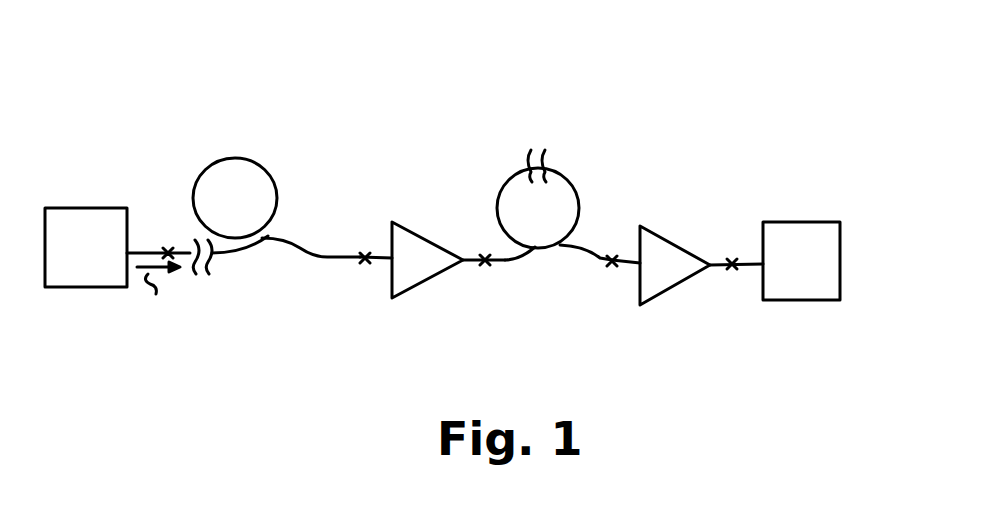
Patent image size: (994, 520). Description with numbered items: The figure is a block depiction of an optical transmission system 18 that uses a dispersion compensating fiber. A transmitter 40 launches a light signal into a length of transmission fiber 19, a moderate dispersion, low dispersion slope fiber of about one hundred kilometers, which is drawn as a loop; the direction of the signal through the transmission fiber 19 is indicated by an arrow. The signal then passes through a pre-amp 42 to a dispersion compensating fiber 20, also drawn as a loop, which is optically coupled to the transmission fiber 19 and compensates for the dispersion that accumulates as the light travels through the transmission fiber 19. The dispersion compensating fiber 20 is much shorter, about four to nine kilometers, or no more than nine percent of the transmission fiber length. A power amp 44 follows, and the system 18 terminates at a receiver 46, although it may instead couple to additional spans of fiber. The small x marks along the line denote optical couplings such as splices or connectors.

The optical transmission system 18 is at (450, 97).
The transmission fiber 19 is at (265, 162).
The dispersion compensating fiber 20 is at (563, 158).
The transmitter 40 is at (88, 204).
The pre-amp 42 is at (428, 232).
The power amp 44 is at (675, 240).
The receiver 46 is at (803, 222).